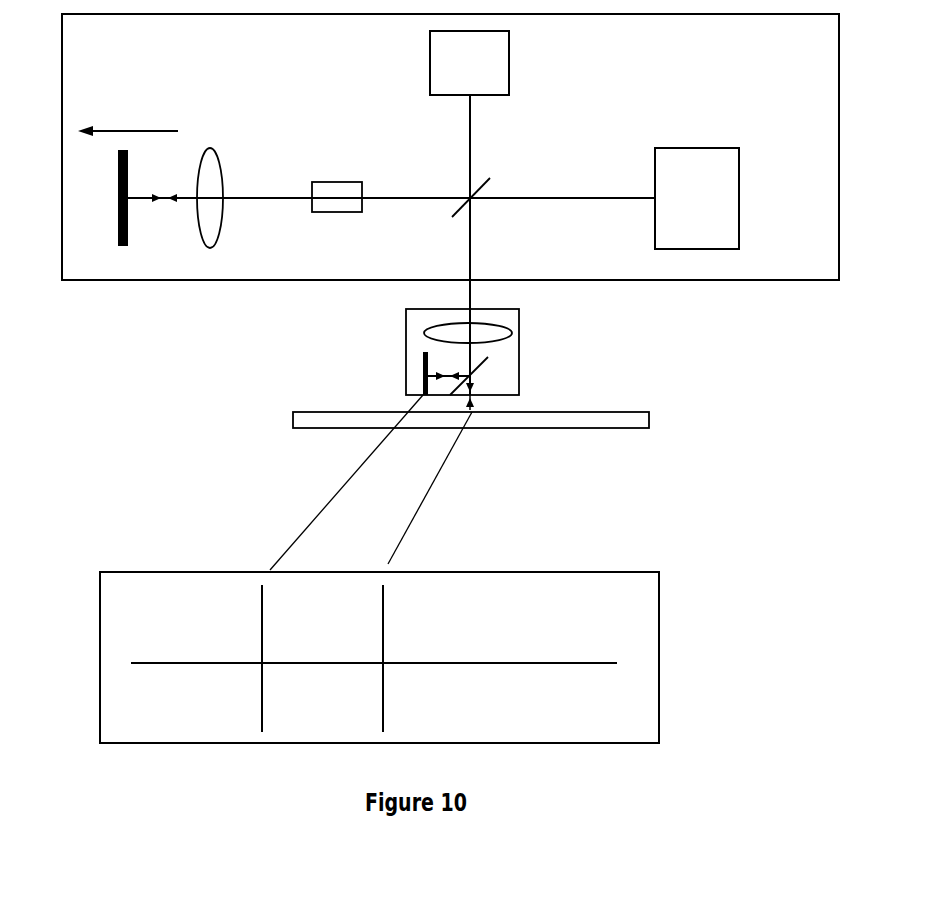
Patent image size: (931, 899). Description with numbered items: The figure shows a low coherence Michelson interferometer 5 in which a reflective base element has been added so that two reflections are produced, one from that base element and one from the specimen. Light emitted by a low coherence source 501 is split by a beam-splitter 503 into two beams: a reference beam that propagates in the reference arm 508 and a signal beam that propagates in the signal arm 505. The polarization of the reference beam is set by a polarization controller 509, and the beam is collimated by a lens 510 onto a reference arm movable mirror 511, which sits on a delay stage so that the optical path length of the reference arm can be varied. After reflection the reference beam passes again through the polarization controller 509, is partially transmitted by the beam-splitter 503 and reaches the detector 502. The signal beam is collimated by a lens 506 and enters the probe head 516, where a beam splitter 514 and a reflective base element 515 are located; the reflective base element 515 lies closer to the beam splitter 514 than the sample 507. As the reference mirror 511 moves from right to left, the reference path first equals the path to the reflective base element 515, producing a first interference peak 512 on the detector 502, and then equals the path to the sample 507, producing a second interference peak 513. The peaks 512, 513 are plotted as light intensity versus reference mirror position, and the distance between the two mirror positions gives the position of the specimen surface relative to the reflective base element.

The low coherence interferometer 5 is at (56, 52).
The low coherence source 501 is at (535, 60).
The detector 502 is at (718, 138).
The beam-splitter 503 is at (502, 180).
The signal arm 505 is at (480, 240).
The lens 506 is at (528, 333).
The sample 507 is at (518, 404).
The reference arm 508 is at (406, 187).
The polarization controller 509 is at (334, 177).
The lens 510 is at (222, 135).
The reference arm movable mirror 511 is at (115, 215).
The first interference peak 512 is at (250, 606).
The second interference peak 513 is at (397, 594).
The beam splitter 514 is at (488, 371).
The reflective base element 515 is at (425, 378).
The probe head 516 is at (400, 333).